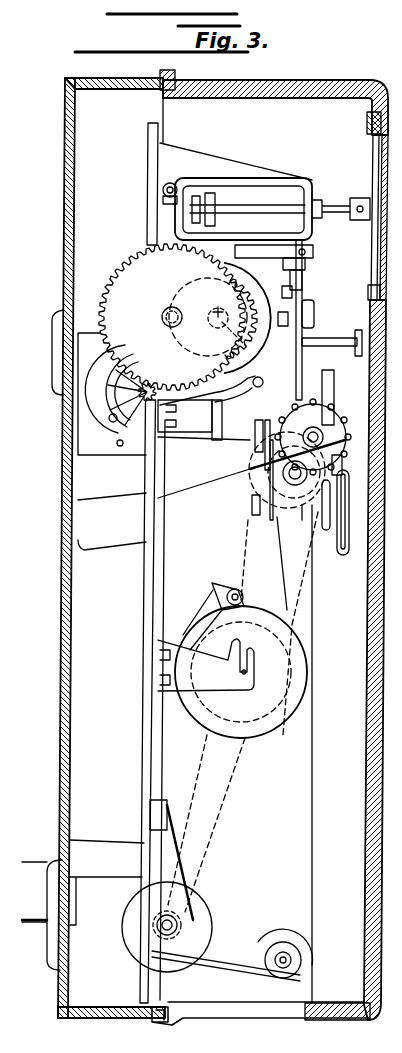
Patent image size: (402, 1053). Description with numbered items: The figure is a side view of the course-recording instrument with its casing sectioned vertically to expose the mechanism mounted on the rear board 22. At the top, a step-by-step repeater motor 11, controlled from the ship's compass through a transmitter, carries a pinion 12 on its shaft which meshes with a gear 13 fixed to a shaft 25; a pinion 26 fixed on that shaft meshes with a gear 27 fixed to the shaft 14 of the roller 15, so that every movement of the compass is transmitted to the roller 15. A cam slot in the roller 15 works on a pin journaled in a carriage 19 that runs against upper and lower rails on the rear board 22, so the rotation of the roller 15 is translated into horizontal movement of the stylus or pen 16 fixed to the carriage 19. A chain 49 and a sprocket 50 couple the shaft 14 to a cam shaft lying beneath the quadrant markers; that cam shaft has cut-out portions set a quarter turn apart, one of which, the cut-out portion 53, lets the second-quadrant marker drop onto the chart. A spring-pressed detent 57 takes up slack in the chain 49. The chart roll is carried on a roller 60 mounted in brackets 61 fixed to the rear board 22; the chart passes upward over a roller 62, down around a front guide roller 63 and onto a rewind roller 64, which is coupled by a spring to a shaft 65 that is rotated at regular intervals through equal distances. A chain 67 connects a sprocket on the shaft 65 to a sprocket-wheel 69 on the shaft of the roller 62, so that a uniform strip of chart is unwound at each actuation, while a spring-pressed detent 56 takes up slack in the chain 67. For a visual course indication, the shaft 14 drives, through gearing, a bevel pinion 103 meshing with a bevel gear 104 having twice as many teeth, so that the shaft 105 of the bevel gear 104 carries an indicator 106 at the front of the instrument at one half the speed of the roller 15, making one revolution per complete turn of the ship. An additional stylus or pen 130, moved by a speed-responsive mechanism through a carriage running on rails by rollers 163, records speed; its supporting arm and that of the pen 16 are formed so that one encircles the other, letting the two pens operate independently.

The step by step repeater motor 11 is at (140, 432).
The pinion 12 is at (170, 408).
The gear 13 is at (172, 317).
The shaft 14 is at (231, 319).
The roller 15 is at (254, 302).
The stylus or pen 16 is at (340, 474).
The carriage 19 is at (313, 312).
The rear board 22 is at (147, 186).
The shaft 25 is at (170, 327).
The pinion 26 is at (162, 316).
The gear 27 is at (188, 291).
The chain 49 is at (315, 346).
The sprocket 50 is at (313, 437).
The cut-out portion 53 is at (294, 424).
The spring-pressed detent 56 is at (213, 606).
The spring-pressed detent 57 is at (211, 390).
The roller 60 is at (272, 736).
The brackets 61 is at (206, 665).
The roller 62 is at (294, 483).
The front guide roller 63 is at (312, 960).
The rewind roller 64 is at (208, 906).
The shaft 65 is at (173, 930).
The chain 67 is at (230, 795).
The sprocket-wheel 69 is at (302, 516).
The bevel pinion 103 is at (171, 184).
The bevel gear 104 is at (214, 190).
The shaft 105 is at (266, 216).
The indicator 106 is at (368, 176).
The stylus or pen 130 is at (338, 550).
The rollers 163 is at (256, 520).